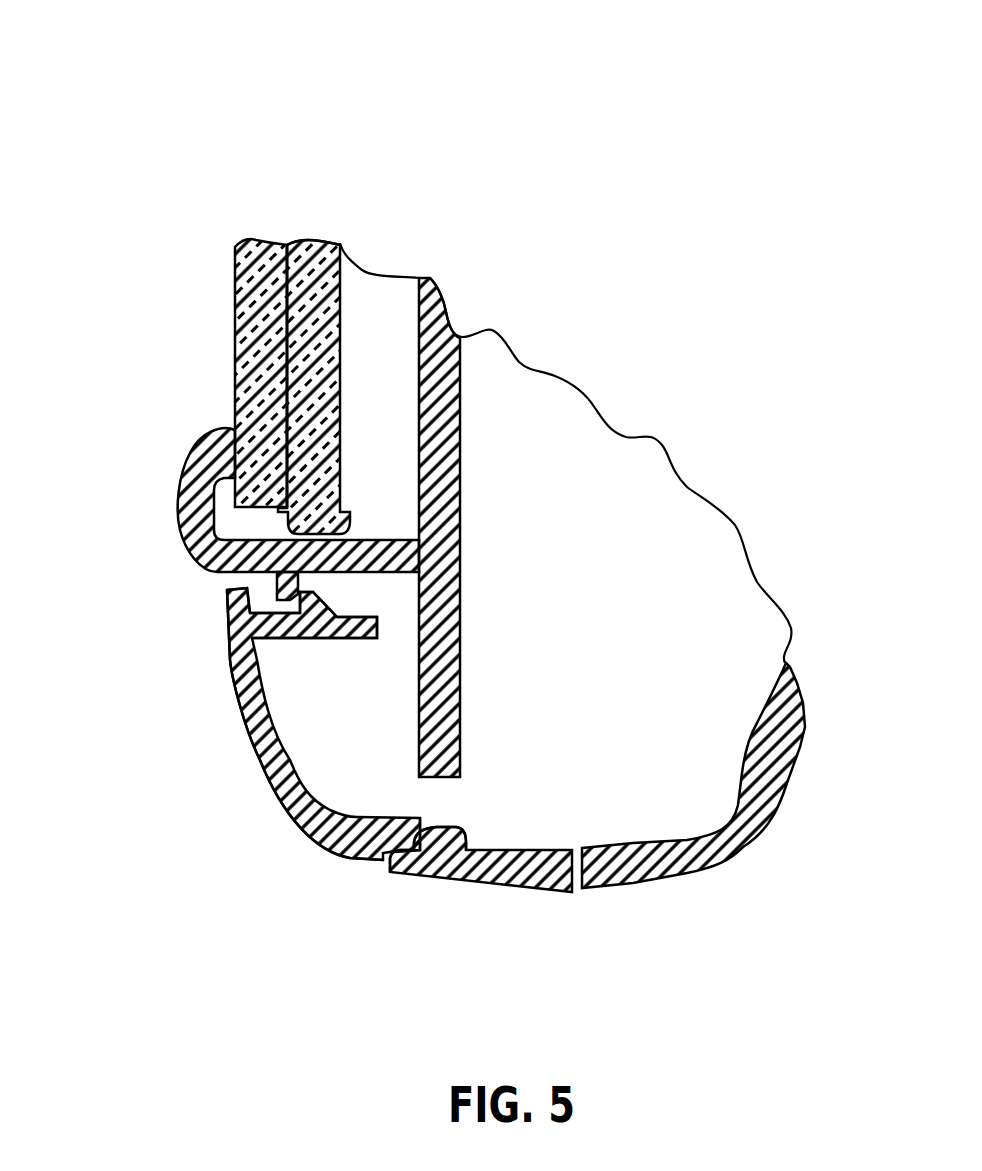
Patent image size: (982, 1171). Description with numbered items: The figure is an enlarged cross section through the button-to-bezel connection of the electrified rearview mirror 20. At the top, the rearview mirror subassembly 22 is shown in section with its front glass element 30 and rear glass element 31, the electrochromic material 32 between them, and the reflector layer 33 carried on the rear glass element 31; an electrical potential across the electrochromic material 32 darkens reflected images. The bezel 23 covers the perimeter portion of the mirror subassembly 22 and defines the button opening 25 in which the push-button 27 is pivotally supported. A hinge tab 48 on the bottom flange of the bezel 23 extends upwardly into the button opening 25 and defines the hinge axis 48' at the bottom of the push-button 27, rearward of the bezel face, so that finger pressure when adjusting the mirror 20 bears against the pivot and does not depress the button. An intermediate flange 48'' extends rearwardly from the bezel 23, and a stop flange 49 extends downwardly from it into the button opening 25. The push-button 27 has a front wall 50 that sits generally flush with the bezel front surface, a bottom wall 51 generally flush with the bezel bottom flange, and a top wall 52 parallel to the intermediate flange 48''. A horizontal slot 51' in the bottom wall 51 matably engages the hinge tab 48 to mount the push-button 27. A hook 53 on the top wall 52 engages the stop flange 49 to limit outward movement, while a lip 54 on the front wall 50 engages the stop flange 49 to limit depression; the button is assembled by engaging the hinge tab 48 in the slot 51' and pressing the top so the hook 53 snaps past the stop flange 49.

The electrified rearview mirror 20 is at (715, 103).
The rearview mirror subassembly 22 is at (276, 321).
The bezel 23 is at (175, 448).
The button opening 25 is at (233, 580).
The push-button 27 is at (249, 744).
The front glass element 30 is at (253, 237).
The rear glass element 31 is at (340, 243).
The electrochromic material 32 is at (277, 243).
The reflector layer 33 is at (320, 237).
The hinge tab 48 is at (594, 807).
The hinge axis 48' is at (424, 889).
The intermediate flange 48'' is at (487, 527).
The stop flange 49 is at (223, 620).
The front wall 50 is at (255, 768).
The bottom wall 51 is at (307, 848).
The horizontal slot 51' is at (370, 795).
The top wall 52 is at (285, 645).
The hook 53 is at (327, 603).
The lip 54 is at (223, 598).